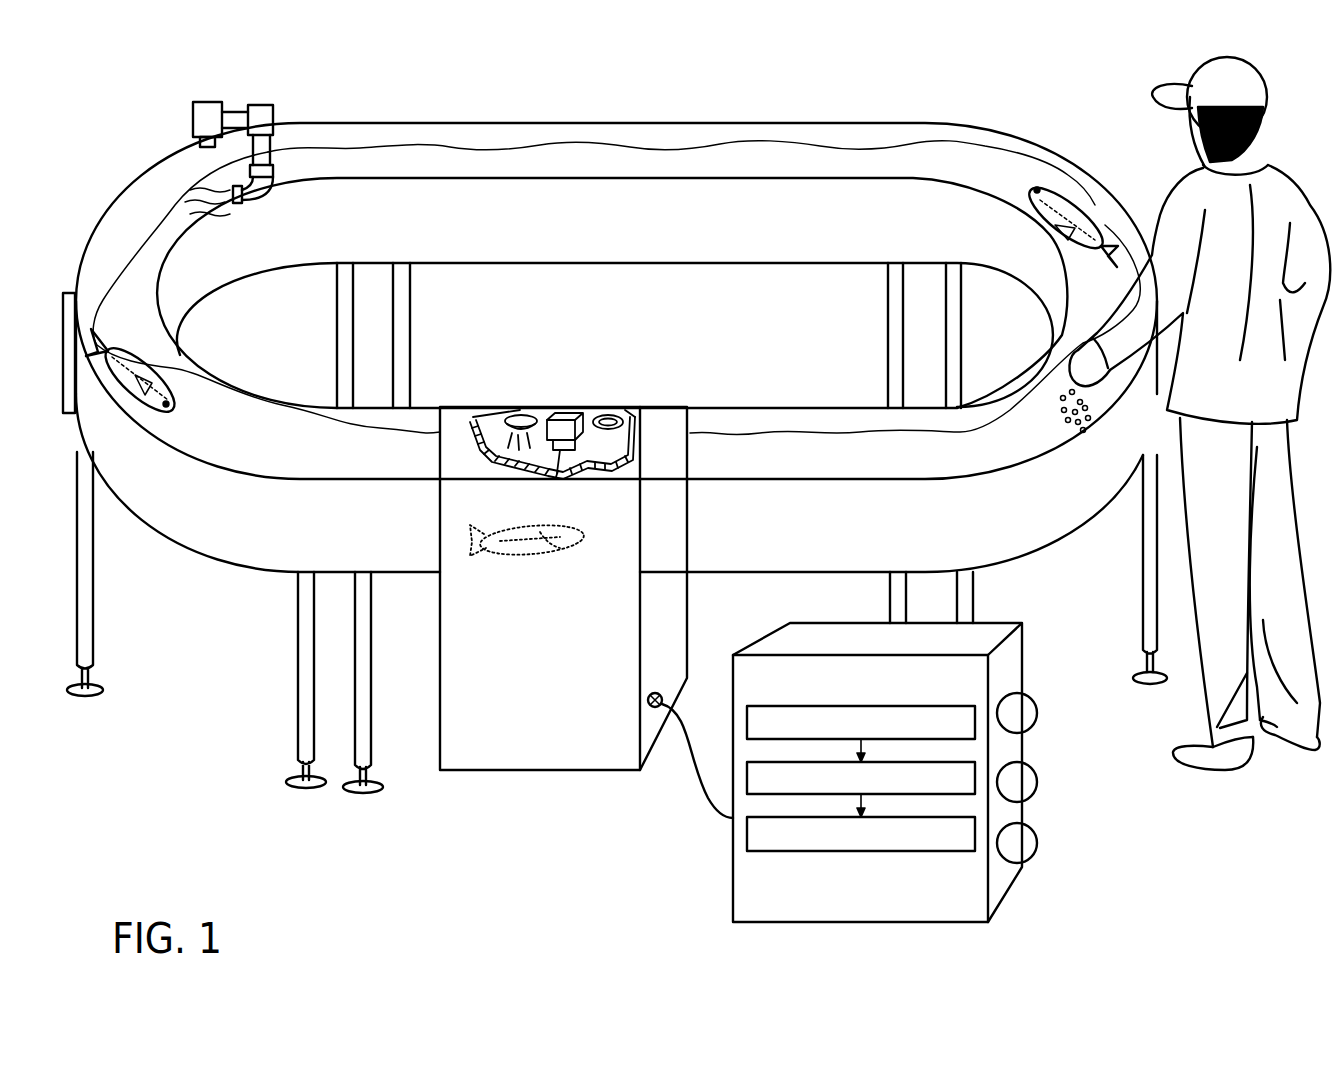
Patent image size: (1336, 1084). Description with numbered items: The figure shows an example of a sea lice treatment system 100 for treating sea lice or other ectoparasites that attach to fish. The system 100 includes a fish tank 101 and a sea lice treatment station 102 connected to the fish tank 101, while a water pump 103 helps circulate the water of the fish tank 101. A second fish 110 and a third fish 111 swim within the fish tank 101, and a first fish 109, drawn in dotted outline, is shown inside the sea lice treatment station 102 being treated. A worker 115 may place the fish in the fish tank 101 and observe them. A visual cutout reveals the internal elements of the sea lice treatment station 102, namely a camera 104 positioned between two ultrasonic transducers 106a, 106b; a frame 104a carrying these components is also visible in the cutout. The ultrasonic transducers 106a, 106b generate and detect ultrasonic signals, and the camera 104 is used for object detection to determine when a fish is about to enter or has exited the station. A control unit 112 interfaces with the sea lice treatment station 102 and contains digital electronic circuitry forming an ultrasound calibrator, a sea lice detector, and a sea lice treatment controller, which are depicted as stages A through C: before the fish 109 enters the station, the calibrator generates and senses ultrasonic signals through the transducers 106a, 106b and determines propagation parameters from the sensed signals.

The sea lice treatment system 100 is at (114, 109).
The fish tank 101 is at (598, 114).
The sea lice treatment station 102 is at (529, 794).
The water pump 103 is at (273, 112).
The camera 104 is at (551, 473).
The transducer mounting frame 104a is at (470, 470).
The ultrasonic transducer 106a is at (511, 407).
The ultrasonic transducer 106b is at (603, 430).
The first fish 109 is at (513, 556).
The second fish 110 is at (103, 326).
The third fish 111 is at (1070, 187).
The control unit 112 is at (1009, 628).
The worker 115 is at (1258, 86).